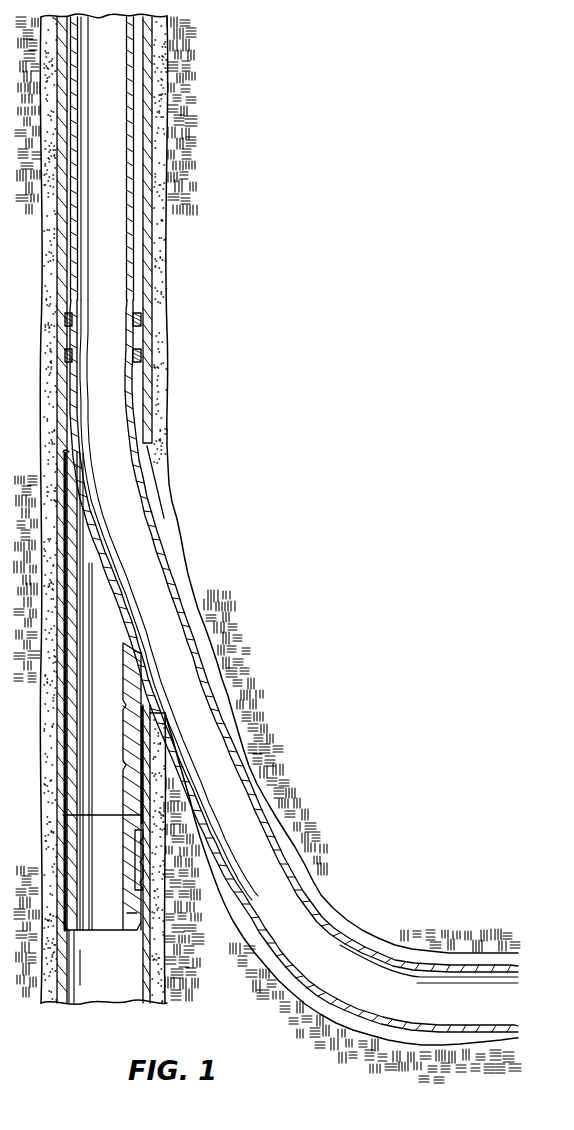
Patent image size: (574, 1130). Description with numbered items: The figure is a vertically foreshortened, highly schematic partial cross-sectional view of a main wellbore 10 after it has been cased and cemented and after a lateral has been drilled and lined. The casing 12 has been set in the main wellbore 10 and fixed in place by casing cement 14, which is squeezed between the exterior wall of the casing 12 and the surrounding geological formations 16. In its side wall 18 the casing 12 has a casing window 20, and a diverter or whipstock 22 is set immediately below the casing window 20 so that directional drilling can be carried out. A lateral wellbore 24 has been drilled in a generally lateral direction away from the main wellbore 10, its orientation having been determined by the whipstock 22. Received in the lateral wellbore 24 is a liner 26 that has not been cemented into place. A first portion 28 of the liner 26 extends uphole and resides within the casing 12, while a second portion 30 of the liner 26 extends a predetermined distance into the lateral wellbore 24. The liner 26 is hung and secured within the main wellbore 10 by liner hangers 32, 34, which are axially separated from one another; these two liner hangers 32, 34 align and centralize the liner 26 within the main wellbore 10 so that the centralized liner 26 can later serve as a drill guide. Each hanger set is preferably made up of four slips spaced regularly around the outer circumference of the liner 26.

The main wellbore 10 is at (140, 225).
The casing 12 is at (147, 288).
The casing cement 14 is at (160, 326).
The geological formations 16 is at (190, 418).
The side wall 18 is at (66, 415).
The casing window 20 is at (121, 620).
The whipstock 22 is at (116, 735).
The lateral wellbore 24 is at (235, 724).
The liner 26 is at (255, 781).
The first portion 28 is at (115, 260).
The second portion 30 is at (283, 910).
The liner hanger 32 is at (73, 320).
The liner hanger 34 is at (140, 355).